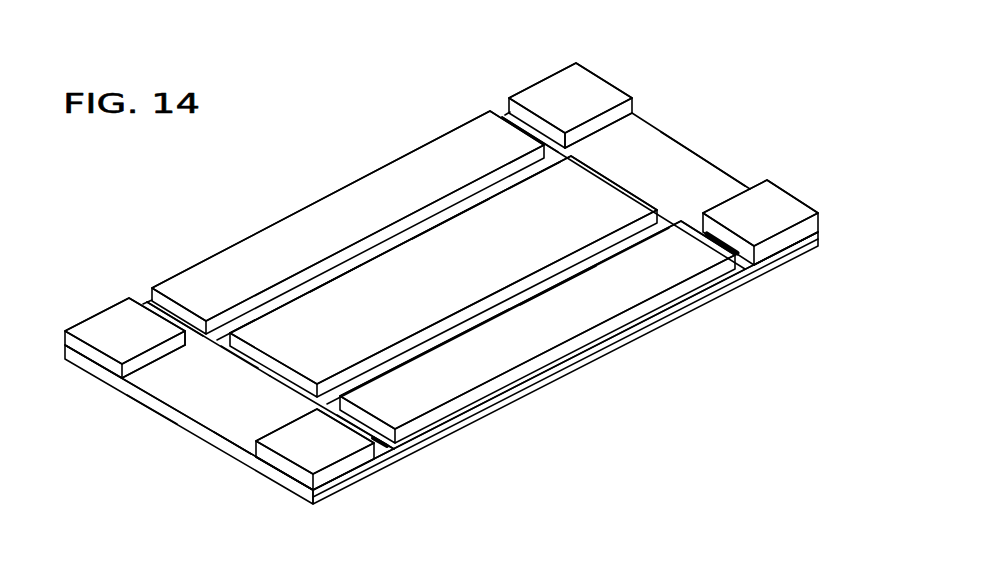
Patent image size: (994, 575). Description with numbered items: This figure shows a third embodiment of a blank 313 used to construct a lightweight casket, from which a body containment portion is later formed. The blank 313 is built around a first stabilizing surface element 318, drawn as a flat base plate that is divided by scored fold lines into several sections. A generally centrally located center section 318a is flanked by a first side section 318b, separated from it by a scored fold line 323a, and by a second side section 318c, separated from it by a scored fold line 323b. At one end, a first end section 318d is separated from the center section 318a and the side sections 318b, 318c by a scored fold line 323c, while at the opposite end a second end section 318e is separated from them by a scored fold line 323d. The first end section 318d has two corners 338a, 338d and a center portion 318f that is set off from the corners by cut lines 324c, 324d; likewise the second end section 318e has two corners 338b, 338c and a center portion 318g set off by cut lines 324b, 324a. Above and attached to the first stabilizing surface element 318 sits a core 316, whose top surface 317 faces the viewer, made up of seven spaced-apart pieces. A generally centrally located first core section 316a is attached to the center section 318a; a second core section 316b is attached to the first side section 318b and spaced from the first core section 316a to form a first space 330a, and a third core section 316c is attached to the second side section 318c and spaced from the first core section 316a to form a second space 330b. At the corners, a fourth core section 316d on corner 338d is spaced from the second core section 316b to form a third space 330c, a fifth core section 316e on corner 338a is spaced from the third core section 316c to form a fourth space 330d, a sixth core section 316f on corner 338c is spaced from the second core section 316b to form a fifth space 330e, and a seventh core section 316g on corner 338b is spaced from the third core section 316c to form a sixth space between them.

The blank 313 is at (462, 281).
The core 316 is at (461, 290).
The first core section 316a is at (403, 300).
The second core section 316b is at (386, 182).
The third core section 316c is at (538, 333).
The fourth core section 316d is at (123, 327).
The fifth core section 316e is at (288, 463).
The sixth core section 316f is at (553, 92).
The seventh core section 316g is at (779, 236).
The top surface 317 is at (345, 207).
The first stabilizing surface element 318 is at (436, 302).
The center section 318a is at (233, 335).
The first side section 318b is at (318, 283).
The second side section 318c is at (628, 337).
The first end section 318d is at (143, 415).
The second end section 318e is at (703, 111).
The center portion 318f is at (242, 434).
The center portion 318g is at (697, 162).
The scored fold line 323a is at (278, 300).
The scored fold line 323b is at (350, 382).
The scored fold line 323c is at (185, 326).
The scored fold line 323d is at (554, 137).
The cut line 324a is at (598, 140).
The cut line 324b is at (750, 170).
The cut line 324c is at (303, 418).
The cut line 324d is at (165, 353).
The first space 330a is at (437, 215).
The second space 330b is at (562, 276).
The third space 330c is at (153, 300).
The fourth space 330d is at (383, 443).
The fifth space 330e is at (502, 102).
The corner 338a is at (256, 458).
The corner 338b is at (820, 233).
The corner 338c is at (633, 110).
The corner 338d is at (124, 380).